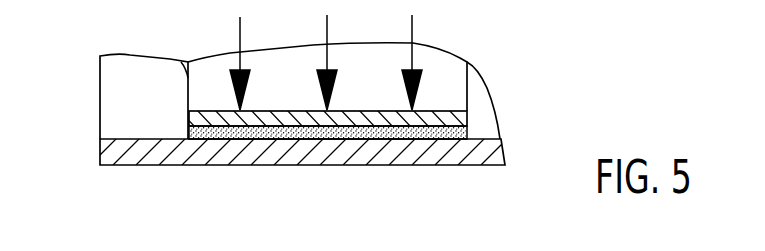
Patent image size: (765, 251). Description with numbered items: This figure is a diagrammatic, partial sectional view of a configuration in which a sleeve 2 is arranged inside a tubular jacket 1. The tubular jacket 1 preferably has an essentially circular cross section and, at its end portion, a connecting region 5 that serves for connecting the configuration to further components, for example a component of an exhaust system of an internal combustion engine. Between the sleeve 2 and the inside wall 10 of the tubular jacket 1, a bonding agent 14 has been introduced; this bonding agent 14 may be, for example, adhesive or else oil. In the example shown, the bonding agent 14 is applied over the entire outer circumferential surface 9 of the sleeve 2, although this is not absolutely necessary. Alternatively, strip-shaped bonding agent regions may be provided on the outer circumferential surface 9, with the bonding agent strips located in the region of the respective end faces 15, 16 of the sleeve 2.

The tubular jacket 1 is at (478, 150).
The sleeve 2 is at (224, 117).
The connecting region 5 is at (113, 87).
The outer circumferential surface 9 is at (399, 140).
The inside wall 10 is at (128, 139).
The bonding agent 14 is at (323, 140).
The end face 15 is at (188, 78).
The end face 16 is at (468, 93).